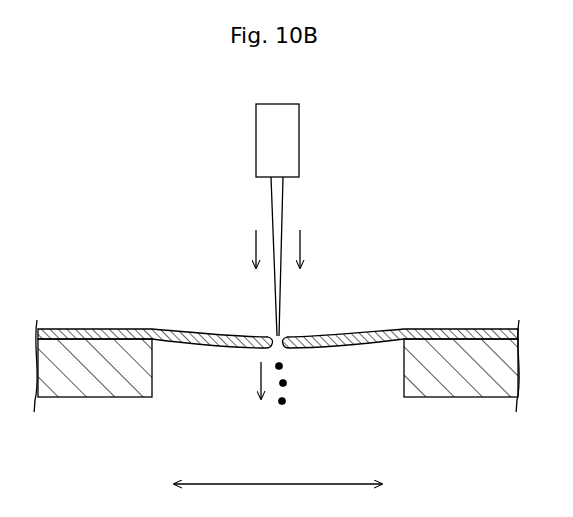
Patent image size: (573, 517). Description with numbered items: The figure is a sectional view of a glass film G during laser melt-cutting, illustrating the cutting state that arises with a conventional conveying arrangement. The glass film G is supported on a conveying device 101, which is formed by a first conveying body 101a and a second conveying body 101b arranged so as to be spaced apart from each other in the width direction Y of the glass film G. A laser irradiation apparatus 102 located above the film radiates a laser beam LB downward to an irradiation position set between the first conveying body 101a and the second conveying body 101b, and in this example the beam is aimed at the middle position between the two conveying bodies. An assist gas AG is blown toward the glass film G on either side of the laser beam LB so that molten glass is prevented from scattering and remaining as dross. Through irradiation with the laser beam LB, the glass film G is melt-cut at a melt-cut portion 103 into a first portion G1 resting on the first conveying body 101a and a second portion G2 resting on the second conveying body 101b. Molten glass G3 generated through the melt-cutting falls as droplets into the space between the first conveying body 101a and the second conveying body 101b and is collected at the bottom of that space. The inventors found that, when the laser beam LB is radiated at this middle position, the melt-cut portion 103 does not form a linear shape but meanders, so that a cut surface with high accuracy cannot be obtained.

The laser irradiation apparatus 102 is at (299, 140).
The laser beam LB is at (284, 195).
The assist gas AG is at (254, 243).
The glass film G is at (456, 320).
The first portion G1 is at (171, 333).
The second portion G2 is at (356, 338).
The molten glass G3 is at (286, 402).
The melt-cut portion 103 is at (271, 333).
The conveying device 101 is at (267, 404).
The first conveying body 101a is at (97, 397).
The second conveying body 101b is at (470, 397).
The width direction Y is at (278, 470).